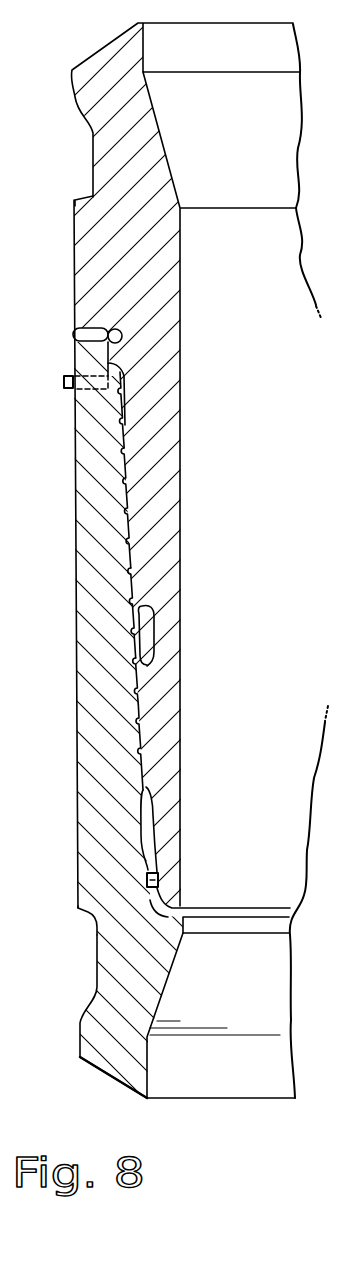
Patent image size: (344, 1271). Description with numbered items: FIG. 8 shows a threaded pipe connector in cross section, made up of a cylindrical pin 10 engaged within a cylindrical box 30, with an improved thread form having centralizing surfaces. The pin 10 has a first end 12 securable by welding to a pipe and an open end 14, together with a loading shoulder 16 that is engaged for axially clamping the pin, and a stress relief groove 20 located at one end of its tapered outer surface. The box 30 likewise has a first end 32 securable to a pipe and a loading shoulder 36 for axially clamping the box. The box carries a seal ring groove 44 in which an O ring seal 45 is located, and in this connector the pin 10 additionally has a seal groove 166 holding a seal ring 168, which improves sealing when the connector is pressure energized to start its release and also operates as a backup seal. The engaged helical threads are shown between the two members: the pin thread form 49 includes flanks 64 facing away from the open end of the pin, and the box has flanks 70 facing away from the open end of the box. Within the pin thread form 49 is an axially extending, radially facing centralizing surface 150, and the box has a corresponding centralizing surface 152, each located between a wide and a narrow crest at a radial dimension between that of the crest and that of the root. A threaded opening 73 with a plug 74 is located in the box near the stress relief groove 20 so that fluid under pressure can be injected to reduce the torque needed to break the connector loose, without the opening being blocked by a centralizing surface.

The pin 10 is at (166, 487).
The first end 12 is at (122, 48).
The open end 14 is at (178, 878).
The loading shoulder 16 is at (78, 200).
The stress relief groove 20 is at (127, 386).
The box 30 is at (80, 502).
The first end 32 is at (85, 1043).
The loading shoulder 36 is at (90, 915).
The seal ring groove 44 is at (147, 895).
The O ring seal 45 is at (147, 882).
The pin thread form 49 is at (152, 631).
The flanks 64 is at (133, 550).
The flanks 70 is at (129, 562).
The threaded opening 73 is at (95, 376).
The plug 74 is at (66, 386).
The centralizing surface 150 is at (146, 726).
The centralizing surface 152 is at (135, 695).
The seal groove 166 is at (115, 328).
The seal ring 168 is at (73, 330).